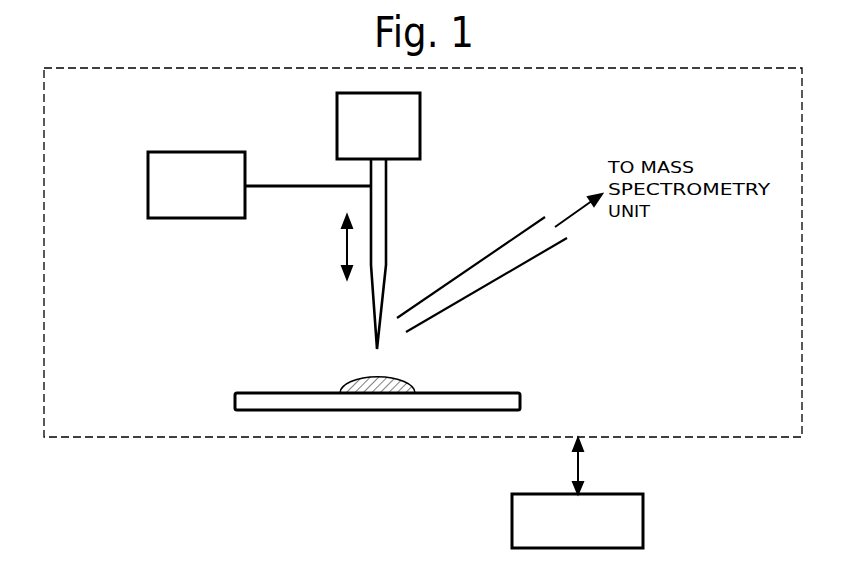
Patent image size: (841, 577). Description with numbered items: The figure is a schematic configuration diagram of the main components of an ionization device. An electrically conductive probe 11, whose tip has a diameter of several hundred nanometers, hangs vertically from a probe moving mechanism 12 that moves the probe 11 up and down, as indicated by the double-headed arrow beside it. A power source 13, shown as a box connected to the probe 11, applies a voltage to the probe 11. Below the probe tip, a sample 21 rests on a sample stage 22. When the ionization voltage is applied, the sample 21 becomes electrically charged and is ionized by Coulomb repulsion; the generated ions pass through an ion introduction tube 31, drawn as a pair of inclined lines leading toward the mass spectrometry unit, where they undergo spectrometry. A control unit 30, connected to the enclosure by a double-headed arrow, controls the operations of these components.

The probe 11 is at (387, 222).
The probe moving mechanism 12 is at (420, 122).
The power source 13 is at (205, 152).
The sample 21 is at (412, 389).
The sample stage 22 is at (523, 400).
The control unit 30 is at (643, 525).
The ion introduction tube 31 is at (522, 268).